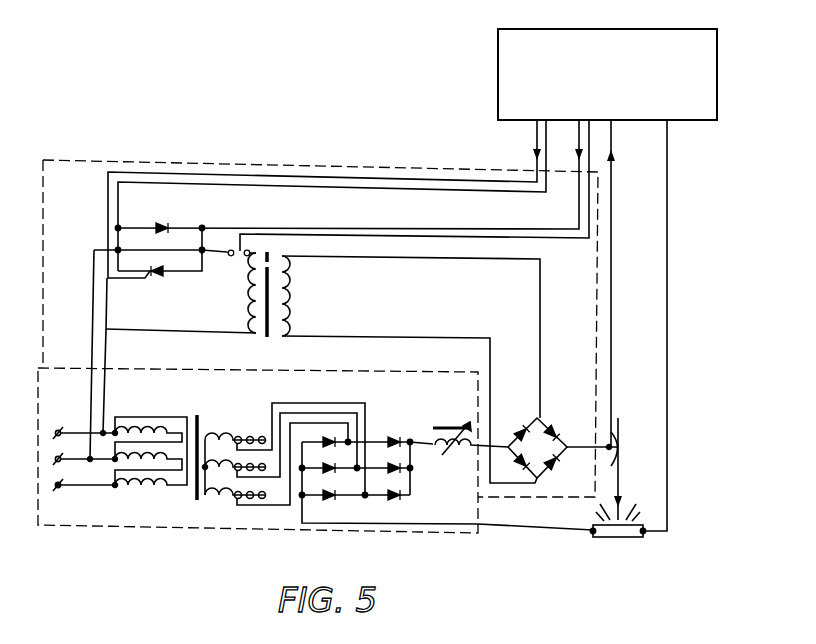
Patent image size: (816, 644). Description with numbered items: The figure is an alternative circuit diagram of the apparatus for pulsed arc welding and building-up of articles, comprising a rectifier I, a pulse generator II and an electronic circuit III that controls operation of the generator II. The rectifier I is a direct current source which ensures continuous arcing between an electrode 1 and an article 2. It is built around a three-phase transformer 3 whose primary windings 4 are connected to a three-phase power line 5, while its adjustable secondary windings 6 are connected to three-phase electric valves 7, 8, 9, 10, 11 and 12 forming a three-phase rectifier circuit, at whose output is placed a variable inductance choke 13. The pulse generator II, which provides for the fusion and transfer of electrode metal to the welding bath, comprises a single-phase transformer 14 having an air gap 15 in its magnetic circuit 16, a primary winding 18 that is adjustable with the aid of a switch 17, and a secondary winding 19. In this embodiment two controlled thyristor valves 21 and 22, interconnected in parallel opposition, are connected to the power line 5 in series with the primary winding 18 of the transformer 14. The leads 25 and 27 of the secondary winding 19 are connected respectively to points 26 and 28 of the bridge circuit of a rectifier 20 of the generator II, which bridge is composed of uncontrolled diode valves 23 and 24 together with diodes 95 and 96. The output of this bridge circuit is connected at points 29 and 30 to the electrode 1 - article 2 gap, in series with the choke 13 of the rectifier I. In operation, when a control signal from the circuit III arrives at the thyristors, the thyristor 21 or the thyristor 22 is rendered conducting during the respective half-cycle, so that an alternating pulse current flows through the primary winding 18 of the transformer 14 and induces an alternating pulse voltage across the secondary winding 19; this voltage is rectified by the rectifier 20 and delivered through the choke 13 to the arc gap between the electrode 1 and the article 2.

The electrode 1 is at (620, 458).
The article 2 is at (615, 540).
The three-phase transformer 3 is at (196, 503).
The primary windings 4 is at (149, 434).
The three-phase power line 5 is at (76, 459).
The adjustable secondary windings 6 is at (283, 448).
The three-phase electric valve 7 is at (331, 436).
The three-phase electric valve 8 is at (330, 474).
The three-phase electric valve 9 is at (330, 501).
The three-phase electric valve 10 is at (394, 436).
The three-phase electric valve 11 is at (398, 472).
The three-phase electric valve 12 is at (398, 500).
The variable inductance choke 13 is at (452, 425).
The single-phase transformer 14 is at (270, 339).
The air gap 15 is at (268, 262).
The magnetic circuit 16 is at (262, 262).
The switch 17 is at (238, 250).
The primary winding 18 is at (247, 310).
The secondary winding 19 is at (289, 308).
The rectifier 20 is at (537, 448).
The controlled thyristor valve 21 is at (170, 222).
The controlled thyristor valve 22 is at (156, 278).
The uncontrolled diode valve 23 is at (519, 466).
The uncontrolled diode valve 24 is at (558, 466).
The lead 25 is at (448, 260).
The point 26 is at (545, 400).
The lead 27 is at (414, 338).
The point 28 is at (539, 481).
The point 29 is at (568, 447).
The point 30 is at (510, 436).
The diode 95 is at (527, 422).
The diode 96 is at (562, 426).
The rectifier I is at (36, 396).
The pulse generator II is at (95, 158).
The electronic circuit III is at (496, 82).